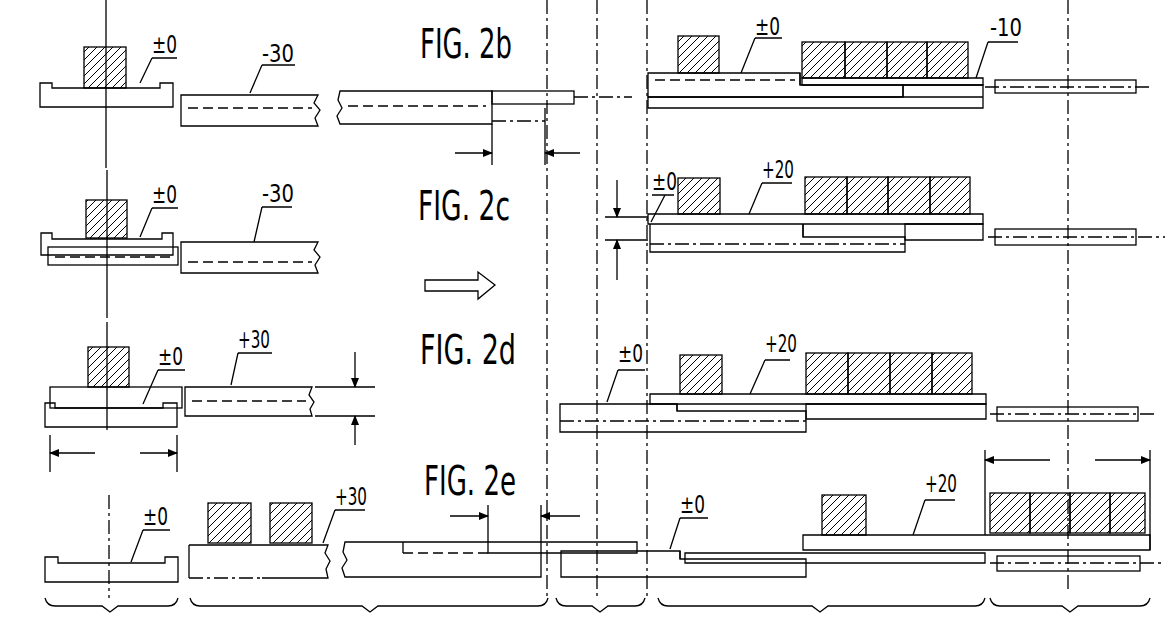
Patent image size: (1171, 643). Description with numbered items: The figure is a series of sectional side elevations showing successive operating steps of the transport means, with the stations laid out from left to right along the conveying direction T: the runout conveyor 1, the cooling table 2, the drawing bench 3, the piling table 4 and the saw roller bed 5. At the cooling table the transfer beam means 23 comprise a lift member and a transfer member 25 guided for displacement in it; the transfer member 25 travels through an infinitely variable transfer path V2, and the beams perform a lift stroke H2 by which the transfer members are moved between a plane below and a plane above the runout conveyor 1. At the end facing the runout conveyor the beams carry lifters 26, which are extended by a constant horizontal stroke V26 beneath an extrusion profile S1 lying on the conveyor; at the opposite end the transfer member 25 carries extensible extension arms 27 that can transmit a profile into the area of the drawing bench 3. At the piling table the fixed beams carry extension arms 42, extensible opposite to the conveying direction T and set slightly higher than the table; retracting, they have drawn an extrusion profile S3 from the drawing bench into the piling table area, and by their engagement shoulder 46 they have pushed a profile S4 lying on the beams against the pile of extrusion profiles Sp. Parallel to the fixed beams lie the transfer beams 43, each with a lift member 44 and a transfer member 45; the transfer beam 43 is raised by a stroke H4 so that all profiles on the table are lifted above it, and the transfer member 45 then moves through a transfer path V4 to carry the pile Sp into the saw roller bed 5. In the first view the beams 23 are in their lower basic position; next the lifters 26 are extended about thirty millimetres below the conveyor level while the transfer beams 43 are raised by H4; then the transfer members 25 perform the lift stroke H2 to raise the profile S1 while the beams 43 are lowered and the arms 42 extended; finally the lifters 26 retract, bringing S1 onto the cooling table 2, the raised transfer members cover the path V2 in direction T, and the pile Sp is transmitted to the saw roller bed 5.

In FIG. 2B, the transfer beam means 23 is at (266, 126).
In FIG. 2C, the transfer beam means 23 is at (262, 274).
In FIG. 2B, the transfer member 25 is at (381, 91).
In FIG. 2C, the transfer member 25 is at (303, 243).
In FIG. 2D, the transfer member 25 is at (286, 387).
In FIG. 2E, the transfer member 25 is at (386, 542).
In FIG. 2C, the lifter 26 is at (85, 265).
In FIG. 2D, the lifter 26 is at (68, 392).
In FIG. 2B, the extension arm 27 is at (534, 91).
In FIG. 2E, the extension arm 27 is at (586, 545).
In FIG. 2B, the extension arm 42 is at (700, 100).
In FIG. 2C, the extension arm 42 is at (735, 240).
In FIG. 2D, the extension arm 42 is at (632, 424).
In FIG. 2E, the extension arm 42 is at (647, 570).
In FIG. 2B, the transfer beam 43 is at (918, 110).
In FIG. 2C, the transfer beam 43 is at (933, 242).
In FIG. 2D, the transfer beam 43 is at (892, 421).
In FIG. 2E, the transfer beam 43 is at (853, 565).
In FIG. 2B, the lift member 44 is at (950, 110).
In FIG. 2C, the lift member 44 is at (952, 236).
In FIG. 2D, the lift member 44 is at (818, 399).
In FIG. 2E, the lift member 44 is at (921, 561).
In FIG. 2B, the transfer member 45 is at (978, 80).
In FIG. 2C, the transfer member 45 is at (983, 215).
In FIG. 2D, the transfer member 45 is at (980, 397).
In FIG. 2E, the transfer member 45 is at (883, 540).
In FIG. 2B, the engagement shoulder 46 is at (804, 82).
In FIG. 2C, the engagement shoulder 46 is at (806, 231).
In FIG. 2D, the engagement shoulder 46 is at (681, 413).
In FIG. 2E, the engagement shoulder 46 is at (708, 548).
In FIG. 2E, the runout conveyor 1 is at (111, 620).
In FIG. 2E, the cooling table 2 is at (369, 620).
In FIG. 2E, the drawing bench 3 is at (600, 620).
In FIG. 2E, the piling table 4 is at (821, 620).
In FIG. 2E, the saw roller bed 5 is at (1070, 620).
In FIG. 2B, the extrusion profile S1 is at (84, 60).
In FIG. 2C, the extrusion profile S1 is at (86, 218).
In FIG. 2D, the extrusion profile S1 is at (88, 360).
In FIG. 2B, the extrusion profile S3 is at (678, 55).
In FIG. 2C, the extrusion profile S3 is at (706, 180).
In FIG. 2D, the extrusion profile S3 is at (701, 374).
In FIG. 2B, the extrusion profile S4 is at (815, 44).
In FIG. 2C, the extrusion profile S4 is at (823, 179).
In FIG. 2D, the extrusion profile S4 is at (889, 373).
In FIG. 2E, the extrusion profile S4 is at (1067, 513).
In FIG. 2B, the pile of extrusion profiles Sp is at (930, 36).
In FIG. 2C, the pile of extrusion profiles Sp is at (964, 173).
In FIG. 2B, the transfer path V2 is at (517, 140).
In FIG. 2E, the transfer path V2 is at (515, 528).
In FIG. 2D, the transfer path V4 is at (1067, 499).
In FIG. 2D, the horizontal stroke V26 is at (113, 456).
In FIG. 2D, the stroke H2 is at (349, 398).
In FIG. 2C, the stroke H4 is at (627, 230).
In FIG. 2C, the conveying direction T is at (473, 286).